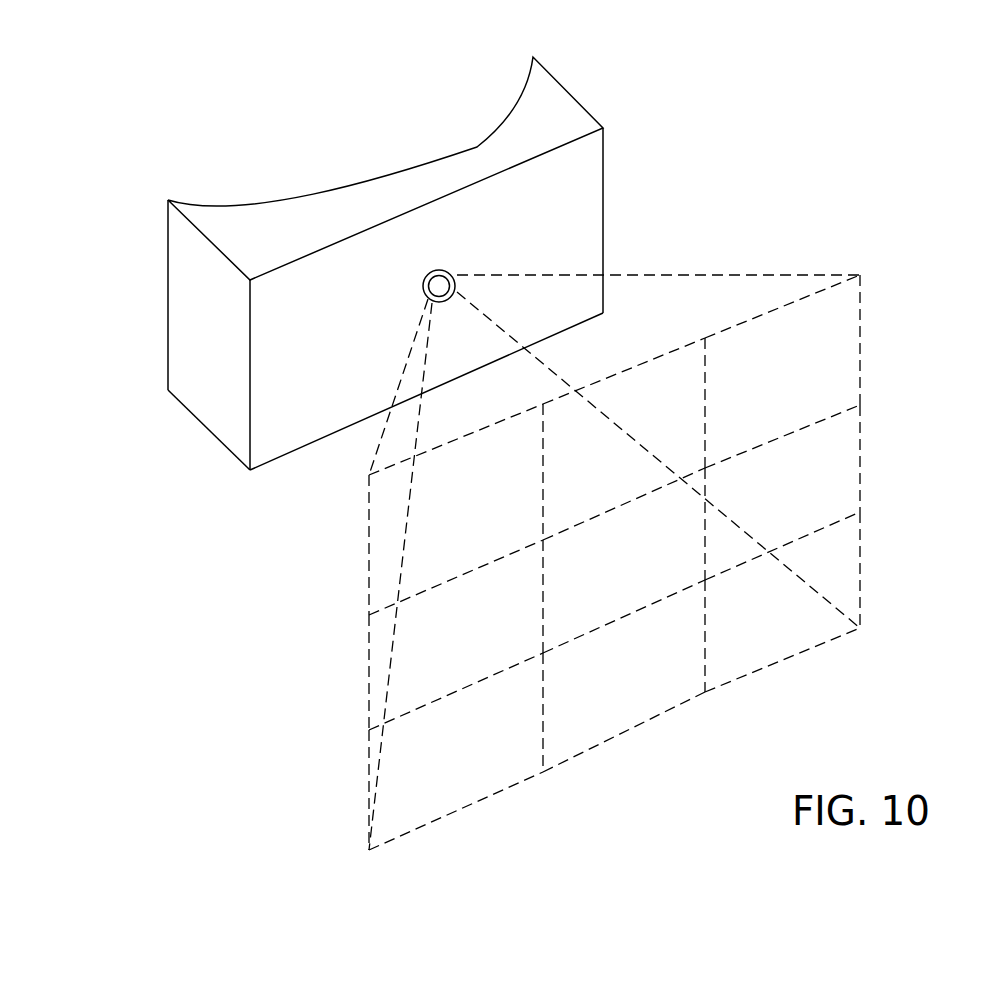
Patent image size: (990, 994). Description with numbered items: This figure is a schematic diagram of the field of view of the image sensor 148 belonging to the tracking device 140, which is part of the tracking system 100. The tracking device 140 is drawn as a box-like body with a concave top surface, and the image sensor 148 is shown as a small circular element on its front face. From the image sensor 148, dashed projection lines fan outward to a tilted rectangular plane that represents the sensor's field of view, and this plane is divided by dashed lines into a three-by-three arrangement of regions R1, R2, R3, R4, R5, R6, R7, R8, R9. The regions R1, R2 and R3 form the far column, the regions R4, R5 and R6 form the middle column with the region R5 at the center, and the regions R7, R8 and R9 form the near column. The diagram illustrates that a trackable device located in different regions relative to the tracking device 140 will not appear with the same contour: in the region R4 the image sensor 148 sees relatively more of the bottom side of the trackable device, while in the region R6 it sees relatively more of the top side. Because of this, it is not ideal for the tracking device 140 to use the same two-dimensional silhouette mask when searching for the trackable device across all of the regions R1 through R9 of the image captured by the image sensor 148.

The tracking system 100 is at (955, 130).
The tracking device 140 is at (568, 92).
The image sensor 148 is at (445, 268).
The region R1 is at (847, 360).
The region R2 is at (847, 462).
The region R3 is at (848, 560).
The region R4 is at (637, 388).
The region R5 is at (640, 580).
The region R6 is at (655, 708).
The region R7 is at (385, 527).
The region R8 is at (385, 645).
The region R9 is at (465, 777).